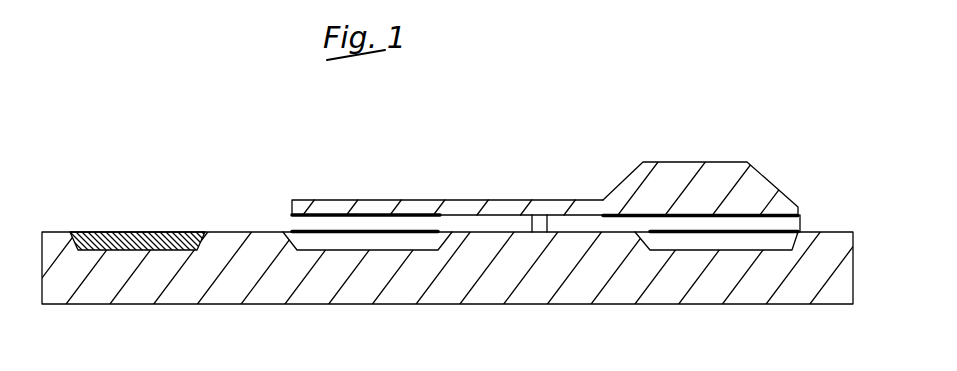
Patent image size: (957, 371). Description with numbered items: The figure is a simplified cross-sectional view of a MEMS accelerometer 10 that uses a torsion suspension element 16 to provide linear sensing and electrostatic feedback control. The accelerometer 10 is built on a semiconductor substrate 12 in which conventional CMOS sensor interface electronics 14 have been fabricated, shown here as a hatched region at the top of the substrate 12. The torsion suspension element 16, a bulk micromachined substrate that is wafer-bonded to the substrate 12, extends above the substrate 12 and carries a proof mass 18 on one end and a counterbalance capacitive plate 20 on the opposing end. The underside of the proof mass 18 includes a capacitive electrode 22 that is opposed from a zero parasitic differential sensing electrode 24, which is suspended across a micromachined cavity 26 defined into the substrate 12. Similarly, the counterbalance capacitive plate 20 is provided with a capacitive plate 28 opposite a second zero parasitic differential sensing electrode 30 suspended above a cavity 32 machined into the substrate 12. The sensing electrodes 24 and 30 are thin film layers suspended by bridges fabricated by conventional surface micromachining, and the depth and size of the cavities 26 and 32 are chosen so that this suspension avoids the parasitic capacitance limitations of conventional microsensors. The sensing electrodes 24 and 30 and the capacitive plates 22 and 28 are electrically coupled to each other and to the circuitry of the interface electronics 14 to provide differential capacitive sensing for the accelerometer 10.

The accelerometer 10 is at (647, 130).
The semiconductor substrate 12 is at (102, 292).
The CMOS sensor interface electronics 14 is at (142, 232).
The torsion suspension element 16 is at (553, 199).
The proof mass 18 is at (692, 170).
The counterbalance capacitive plate 20 is at (299, 199).
The capacitive electrode 22 is at (802, 222).
The zero parasitic differential sensing electrode 24 is at (803, 230).
The micromachined cavity 26 is at (757, 245).
The capacitive plate 28 is at (292, 215).
The second zero parasitic differential sensing electrode 30 is at (338, 237).
The cavity 32 is at (413, 245).